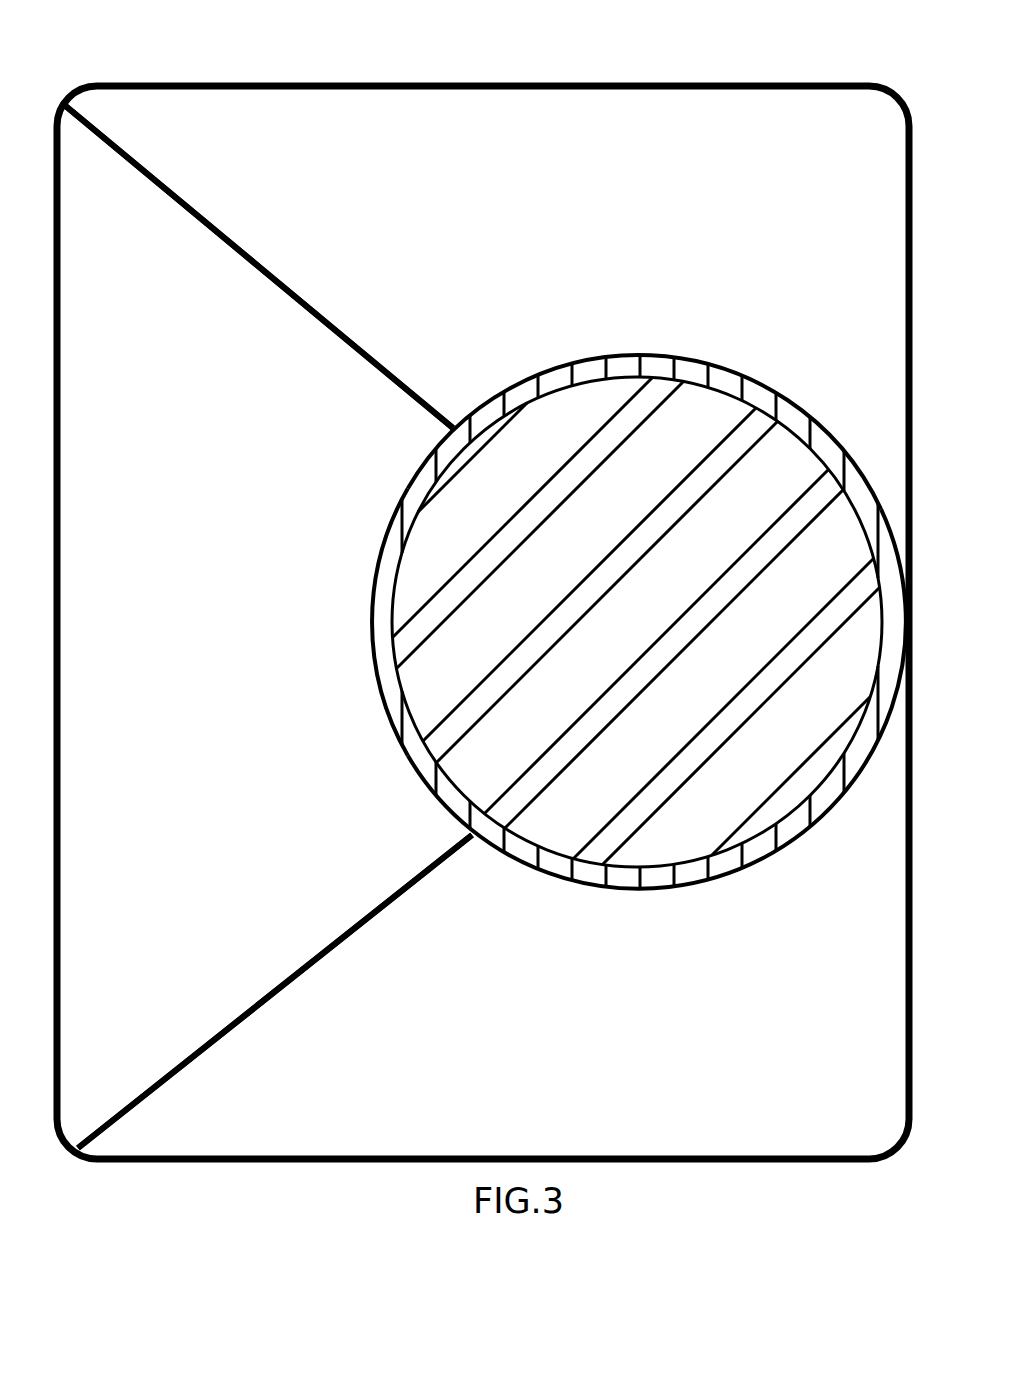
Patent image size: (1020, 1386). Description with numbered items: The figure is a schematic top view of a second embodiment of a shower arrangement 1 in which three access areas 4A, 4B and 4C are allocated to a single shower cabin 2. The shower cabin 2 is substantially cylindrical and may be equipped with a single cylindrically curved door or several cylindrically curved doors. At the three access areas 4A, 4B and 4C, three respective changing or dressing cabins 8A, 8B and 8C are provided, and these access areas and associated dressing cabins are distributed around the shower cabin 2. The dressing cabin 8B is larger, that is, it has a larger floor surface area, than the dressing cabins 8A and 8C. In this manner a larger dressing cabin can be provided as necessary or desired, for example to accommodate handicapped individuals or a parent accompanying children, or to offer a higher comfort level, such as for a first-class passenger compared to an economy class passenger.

The shower arrangement 1 is at (312, 53).
The shower cabin 2 is at (635, 633).
The access area 4A is at (684, 348).
The access area 4B is at (368, 576).
The access area 4C is at (790, 860).
The dressing cabin 8A is at (641, 212).
The dressing cabin 8B is at (223, 757).
The dressing cabin 8C is at (607, 1057).